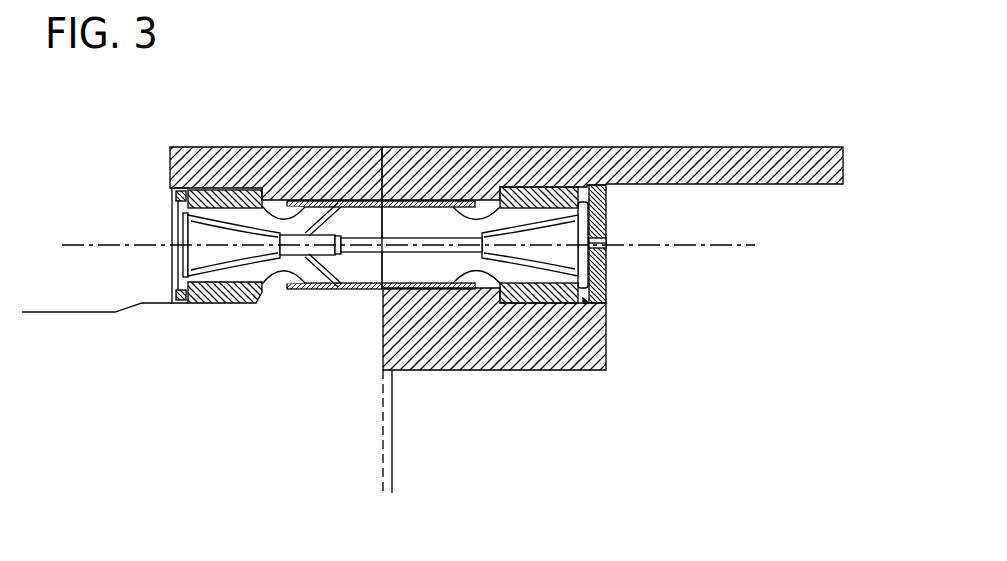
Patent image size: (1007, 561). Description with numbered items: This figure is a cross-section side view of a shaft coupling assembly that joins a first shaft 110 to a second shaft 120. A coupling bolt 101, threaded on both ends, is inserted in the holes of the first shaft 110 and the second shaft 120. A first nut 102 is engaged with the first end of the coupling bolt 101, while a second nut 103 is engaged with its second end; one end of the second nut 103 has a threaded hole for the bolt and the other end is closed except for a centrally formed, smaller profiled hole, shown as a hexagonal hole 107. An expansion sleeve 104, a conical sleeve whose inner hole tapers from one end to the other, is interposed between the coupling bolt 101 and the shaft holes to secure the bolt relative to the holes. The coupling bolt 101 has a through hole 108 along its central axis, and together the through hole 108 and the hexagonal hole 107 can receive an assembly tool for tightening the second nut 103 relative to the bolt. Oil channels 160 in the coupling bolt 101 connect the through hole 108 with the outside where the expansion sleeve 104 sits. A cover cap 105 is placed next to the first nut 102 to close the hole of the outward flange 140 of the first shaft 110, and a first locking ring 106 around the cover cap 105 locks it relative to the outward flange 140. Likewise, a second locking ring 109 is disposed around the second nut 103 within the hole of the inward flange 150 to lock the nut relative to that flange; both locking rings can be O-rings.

The coupling bolt 101 is at (412, 218).
The first nut 102 is at (203, 190).
The second nut 103 is at (606, 282).
The expansion sleeve 104 is at (398, 289).
The cover cap 105 is at (170, 202).
The first locking ring 106 is at (183, 305).
The hexagonal hole 107 is at (606, 239).
The through hole 108 is at (355, 251).
The second locking ring 109 is at (588, 303).
The first shaft 110 is at (88, 330).
The second shaft 120 is at (775, 165).
The outward flange 140 is at (273, 167).
The inward flange 150 is at (596, 167).
The oil channels 160 is at (306, 282).